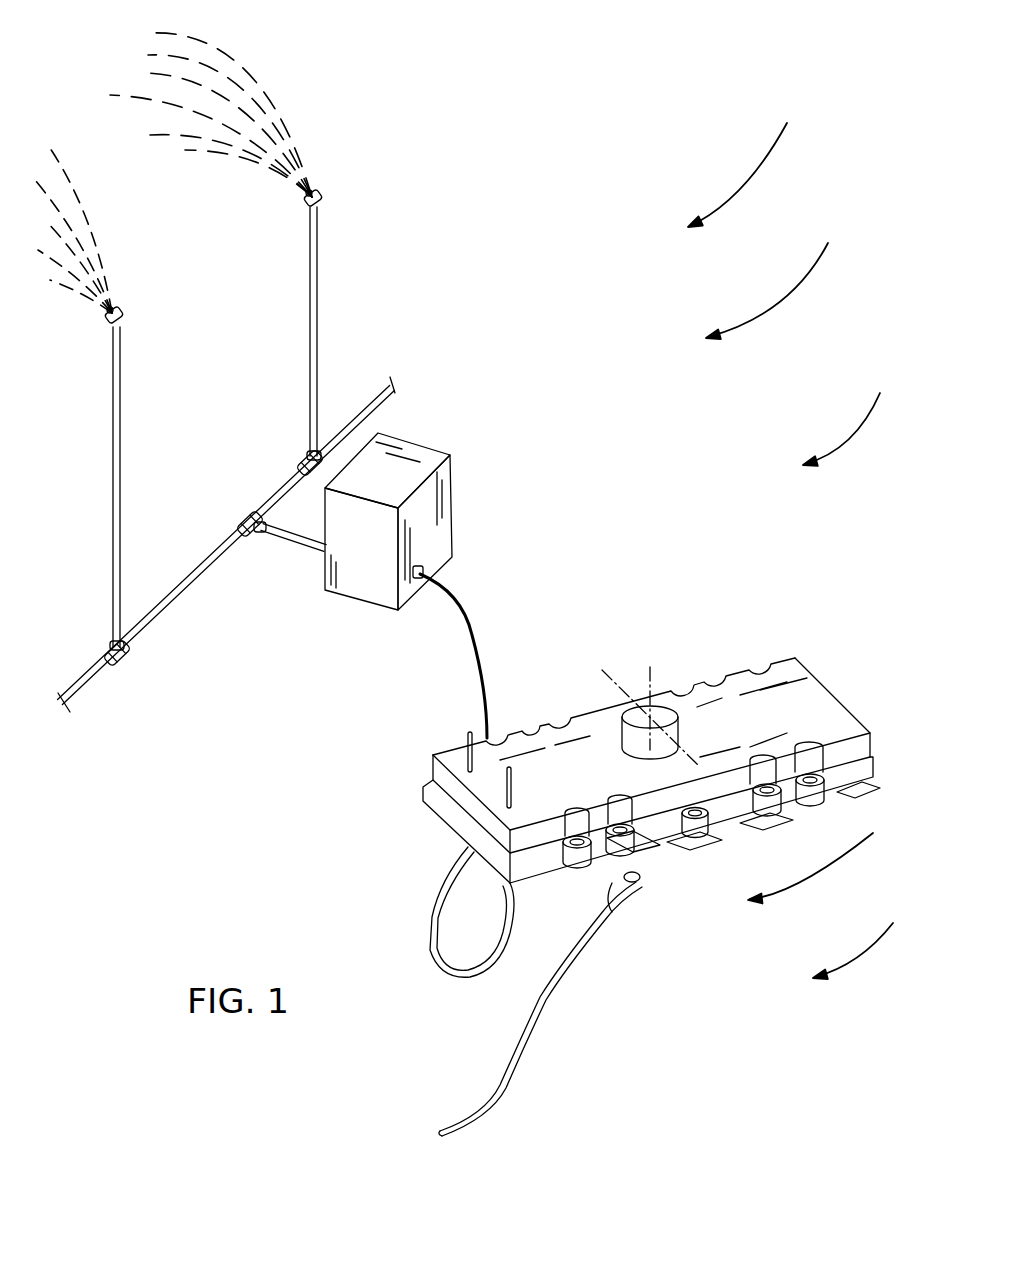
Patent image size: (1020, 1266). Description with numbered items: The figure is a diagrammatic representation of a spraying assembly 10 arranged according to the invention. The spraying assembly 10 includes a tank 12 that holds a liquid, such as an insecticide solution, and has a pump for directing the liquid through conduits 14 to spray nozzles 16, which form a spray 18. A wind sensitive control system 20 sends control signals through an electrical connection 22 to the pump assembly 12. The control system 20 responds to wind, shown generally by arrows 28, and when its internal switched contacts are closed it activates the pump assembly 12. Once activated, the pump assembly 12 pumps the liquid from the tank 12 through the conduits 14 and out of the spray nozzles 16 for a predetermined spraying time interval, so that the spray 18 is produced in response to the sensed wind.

The spraying assembly 10 is at (470, 229).
The tank 12 is at (443, 457).
The conduits 14 is at (319, 272).
The spray nozzles 16 is at (318, 193).
The spray 18 is at (246, 76).
The wind sensitive control system 20 is at (780, 680).
The electrical connection 22 is at (478, 614).
The arrows 28 is at (728, 203).